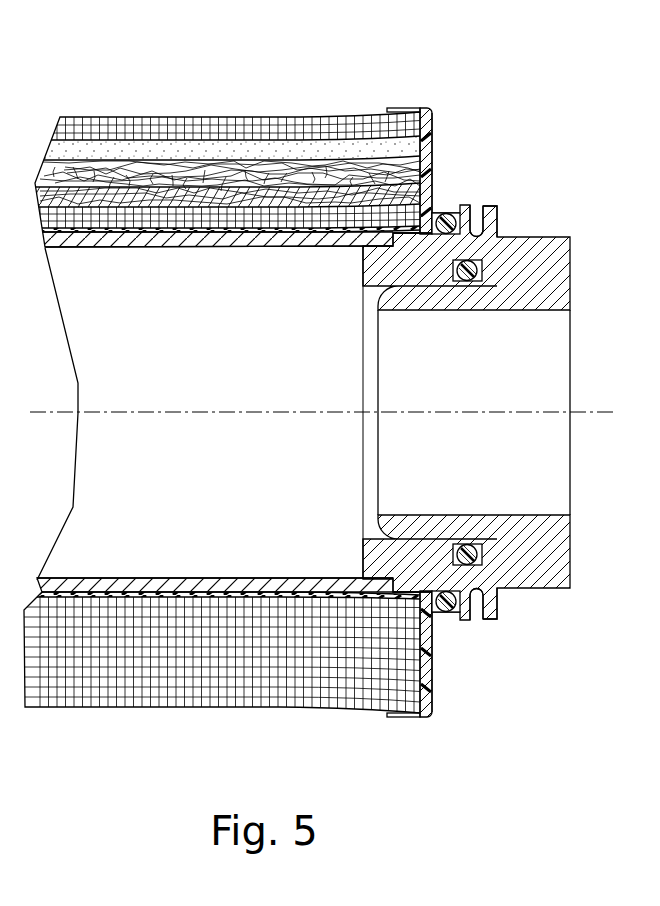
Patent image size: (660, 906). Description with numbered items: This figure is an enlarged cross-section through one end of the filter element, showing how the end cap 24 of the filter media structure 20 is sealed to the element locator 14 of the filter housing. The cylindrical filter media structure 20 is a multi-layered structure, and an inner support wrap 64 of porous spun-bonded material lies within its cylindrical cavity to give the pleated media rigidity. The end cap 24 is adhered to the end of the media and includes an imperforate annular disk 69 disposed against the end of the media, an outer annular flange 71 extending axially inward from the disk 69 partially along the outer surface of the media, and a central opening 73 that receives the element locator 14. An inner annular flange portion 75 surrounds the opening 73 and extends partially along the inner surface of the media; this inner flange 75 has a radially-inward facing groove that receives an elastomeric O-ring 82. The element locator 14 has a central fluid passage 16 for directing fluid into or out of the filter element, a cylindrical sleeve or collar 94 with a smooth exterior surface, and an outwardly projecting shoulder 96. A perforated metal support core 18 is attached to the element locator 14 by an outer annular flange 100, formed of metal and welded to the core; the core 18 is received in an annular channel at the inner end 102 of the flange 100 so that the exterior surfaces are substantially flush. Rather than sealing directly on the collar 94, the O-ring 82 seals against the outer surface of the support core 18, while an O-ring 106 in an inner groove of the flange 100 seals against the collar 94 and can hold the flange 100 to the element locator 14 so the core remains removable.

The element locator 14 is at (542, 297).
The central fluid passage 16 is at (545, 453).
The perforated metal support core 18 is at (214, 250).
The filter media structure 20 is at (215, 90).
The end cap 24 is at (432, 138).
The inner support wrap 64 is at (124, 580).
The imperforate annular disk 69 is at (432, 155).
The outer annular flange 71 is at (407, 108).
The central opening 73 is at (474, 236).
The inner annular flange portion 75 is at (410, 245).
The O-ring 82 is at (446, 236).
The cylindrical sleeve or collar 94 is at (400, 303).
The outwardly projecting shoulder 96 is at (552, 248).
The outer annular flange 100 is at (497, 234).
The inner end of the flange 102 is at (363, 268).
The O-ring 106 is at (468, 282).